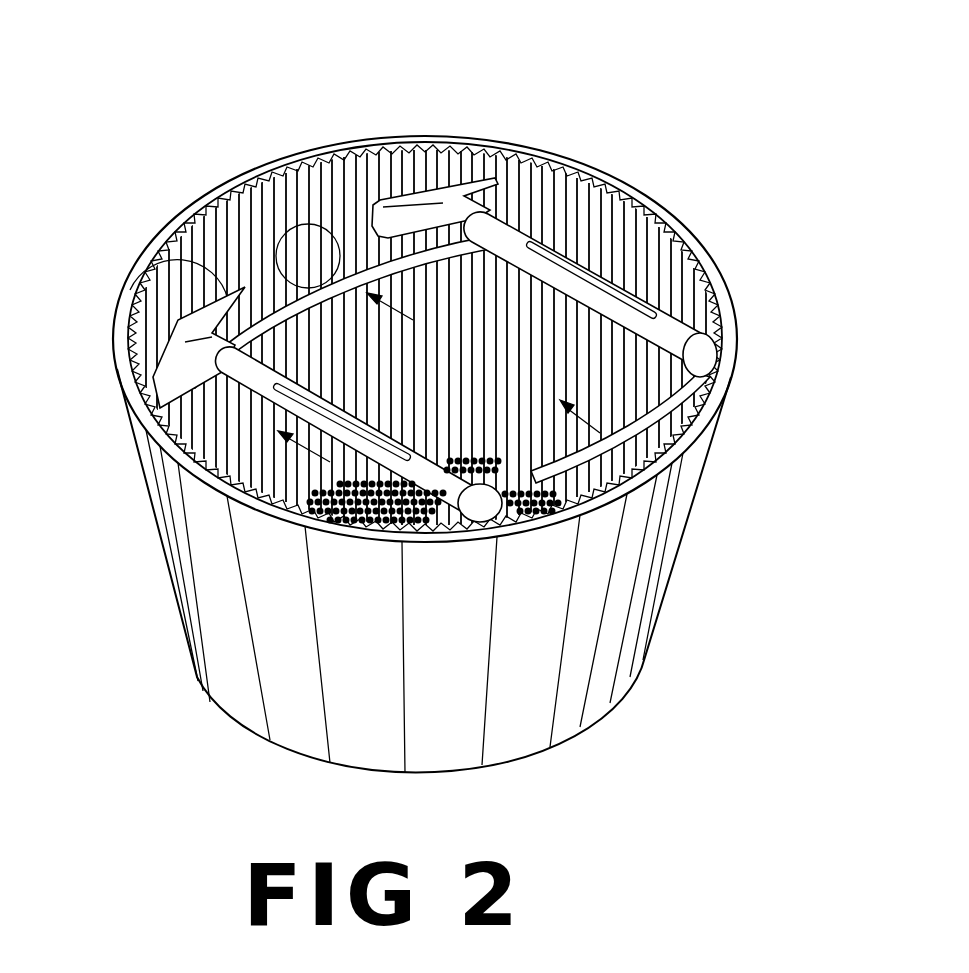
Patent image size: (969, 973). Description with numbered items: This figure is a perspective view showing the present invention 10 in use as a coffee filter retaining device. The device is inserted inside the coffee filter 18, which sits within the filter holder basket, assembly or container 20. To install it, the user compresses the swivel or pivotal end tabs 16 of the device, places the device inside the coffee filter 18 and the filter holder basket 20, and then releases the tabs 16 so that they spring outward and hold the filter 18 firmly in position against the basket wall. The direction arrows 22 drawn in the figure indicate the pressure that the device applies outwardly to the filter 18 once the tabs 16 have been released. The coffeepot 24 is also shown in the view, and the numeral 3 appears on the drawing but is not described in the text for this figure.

The tumbling apparatus 3 is at (463, 395).
The container 10 is at (283, 228).
The serrated inner wall 16 is at (140, 286).
The rim 18 is at (446, 136).
The side wall 20 is at (680, 560).
The hammer handles 22 is at (717, 325).
The beads 24 is at (315, 525).